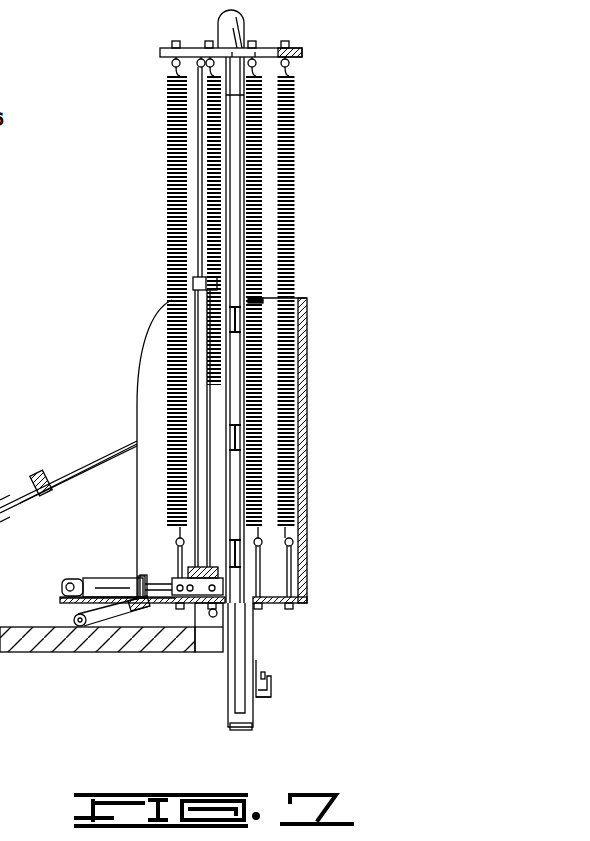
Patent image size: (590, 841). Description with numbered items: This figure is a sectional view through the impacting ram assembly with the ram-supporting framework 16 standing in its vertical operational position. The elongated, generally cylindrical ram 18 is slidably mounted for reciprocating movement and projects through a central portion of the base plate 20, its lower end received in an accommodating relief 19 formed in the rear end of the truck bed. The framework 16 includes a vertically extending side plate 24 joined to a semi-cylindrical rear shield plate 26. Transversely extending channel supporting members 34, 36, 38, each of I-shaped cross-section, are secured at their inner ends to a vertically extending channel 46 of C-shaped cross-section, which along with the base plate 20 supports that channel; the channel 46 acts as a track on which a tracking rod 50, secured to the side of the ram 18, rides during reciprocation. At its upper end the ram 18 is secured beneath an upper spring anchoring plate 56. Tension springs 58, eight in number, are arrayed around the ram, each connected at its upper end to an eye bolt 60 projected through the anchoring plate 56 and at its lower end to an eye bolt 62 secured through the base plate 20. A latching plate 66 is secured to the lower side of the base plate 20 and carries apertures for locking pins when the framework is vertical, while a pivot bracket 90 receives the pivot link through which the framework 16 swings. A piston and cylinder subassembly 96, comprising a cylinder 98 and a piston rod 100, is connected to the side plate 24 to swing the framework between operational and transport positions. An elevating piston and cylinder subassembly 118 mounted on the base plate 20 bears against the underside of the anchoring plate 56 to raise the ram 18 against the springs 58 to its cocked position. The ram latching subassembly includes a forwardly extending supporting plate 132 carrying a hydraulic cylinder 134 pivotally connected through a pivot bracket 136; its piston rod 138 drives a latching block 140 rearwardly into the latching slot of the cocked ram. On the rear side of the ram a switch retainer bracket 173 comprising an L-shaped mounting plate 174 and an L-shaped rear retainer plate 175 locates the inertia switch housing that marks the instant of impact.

The ram-supporting framework 16 is at (330, 584).
The ram 18 is at (235, 728).
The accommodating relief 19 is at (213, 643).
The base plate 20 is at (285, 610).
The side plate 24 is at (163, 417).
The rear shield plate 26 is at (305, 335).
The channel supporting member 34 is at (262, 513).
The channel supporting member 36 is at (243, 420).
The channel supporting member 38 is at (230, 317).
The channel 46 is at (232, 342).
The tracking rod 50 is at (232, 115).
The upper spring anchoring plate 56 is at (164, 47).
The tension spring 58 is at (295, 158).
The eye bolt 60 is at (300, 68).
The eye bolt 62 is at (292, 556).
The latching plate 66 is at (203, 620).
The pivot bracket 90 is at (70, 625).
The piston and cylinder subassembly 96 is at (84, 462).
The cylinder 98 is at (20, 482).
The piston rod 100 is at (77, 470).
The elevating piston and cylinder subassembly 118 is at (190, 142).
The supporting plate 132 is at (58, 587).
The hydraulic cylinder 134 is at (110, 580).
The pivot bracket 136 is at (60, 590).
The piston rod 138 is at (156, 577).
The latching block 140 is at (165, 608).
The switch retainer bracket 173 is at (270, 701).
The L-shaped mounting plate 174 is at (258, 672).
The L-shaped rear retainer plate 175 is at (271, 686).